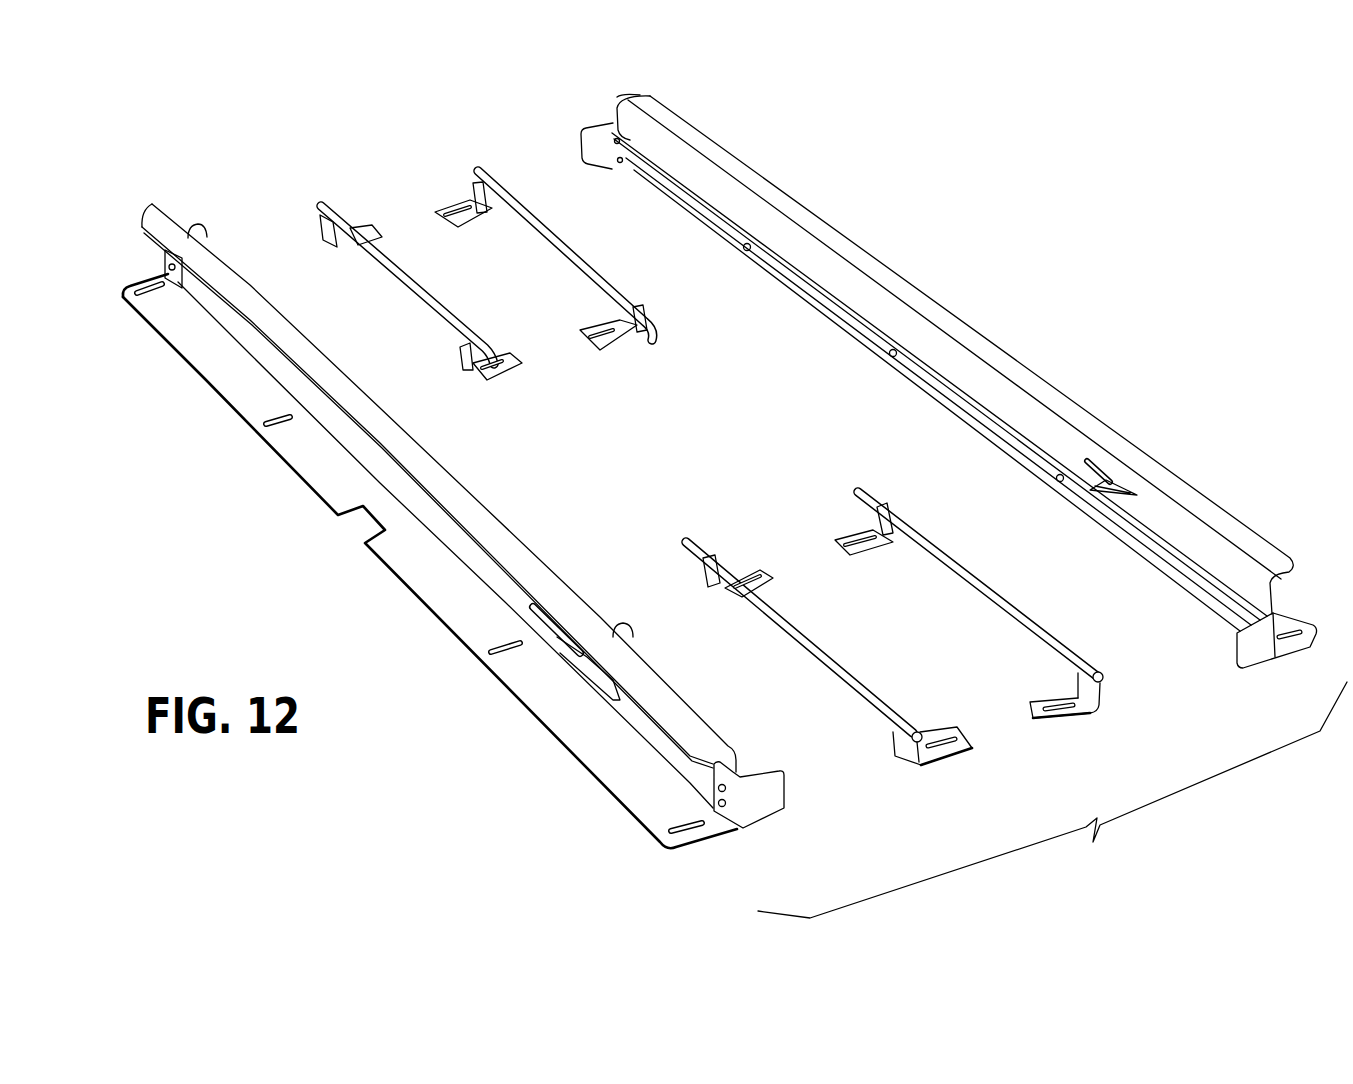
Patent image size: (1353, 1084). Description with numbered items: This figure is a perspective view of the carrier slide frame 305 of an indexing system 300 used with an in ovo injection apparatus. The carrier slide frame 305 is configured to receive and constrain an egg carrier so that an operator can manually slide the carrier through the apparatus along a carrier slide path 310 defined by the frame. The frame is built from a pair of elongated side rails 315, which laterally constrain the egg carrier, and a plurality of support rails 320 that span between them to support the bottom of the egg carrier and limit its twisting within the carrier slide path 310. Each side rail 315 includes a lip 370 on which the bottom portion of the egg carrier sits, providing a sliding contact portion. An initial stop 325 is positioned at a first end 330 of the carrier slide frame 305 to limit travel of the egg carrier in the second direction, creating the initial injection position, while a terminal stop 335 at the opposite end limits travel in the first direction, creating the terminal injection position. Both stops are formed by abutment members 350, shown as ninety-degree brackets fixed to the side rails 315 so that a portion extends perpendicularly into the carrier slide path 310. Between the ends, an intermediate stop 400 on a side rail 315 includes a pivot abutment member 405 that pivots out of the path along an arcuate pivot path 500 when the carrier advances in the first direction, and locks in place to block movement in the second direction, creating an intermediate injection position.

The indexing system 300 is at (857, 149).
The carrier slide frame 305 is at (1052, 800).
The carrier slide path 310 is at (735, 390).
The side rail 315 is at (424, 572).
The support rail 320 is at (390, 268).
The initial stop 325 is at (772, 843).
The first end 330 is at (907, 790).
The terminal stop 335 is at (204, 188).
The abutment member 350 is at (207, 228).
The lip 370 is at (614, 116).
The intermediate stop 400 is at (1198, 472).
The pivot abutment member 405 is at (619, 628).
The arcuate pivot path 500 is at (605, 597).